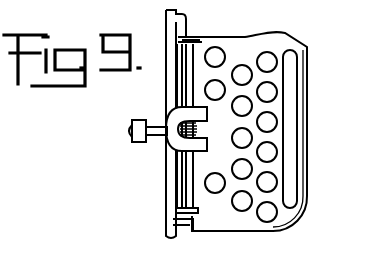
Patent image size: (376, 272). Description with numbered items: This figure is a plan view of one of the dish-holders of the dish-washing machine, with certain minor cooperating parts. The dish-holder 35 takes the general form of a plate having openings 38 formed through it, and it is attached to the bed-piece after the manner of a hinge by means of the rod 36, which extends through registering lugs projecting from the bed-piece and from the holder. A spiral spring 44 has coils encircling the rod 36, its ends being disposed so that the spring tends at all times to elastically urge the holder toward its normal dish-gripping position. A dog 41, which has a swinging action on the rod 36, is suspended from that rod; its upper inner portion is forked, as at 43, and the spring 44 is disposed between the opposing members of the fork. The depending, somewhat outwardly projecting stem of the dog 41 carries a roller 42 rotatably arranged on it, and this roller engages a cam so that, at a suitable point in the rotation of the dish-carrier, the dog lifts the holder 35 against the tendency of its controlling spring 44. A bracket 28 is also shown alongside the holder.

The bracket 28 is at (170, 20).
The dish-holder 35 is at (261, 131).
The rod 36 is at (185, 90).
The openings 38 is at (245, 72).
The dog 41 is at (187, 143).
The roller 42 is at (138, 142).
The fork 43 is at (190, 150).
The spiral spring 44 is at (208, 127).